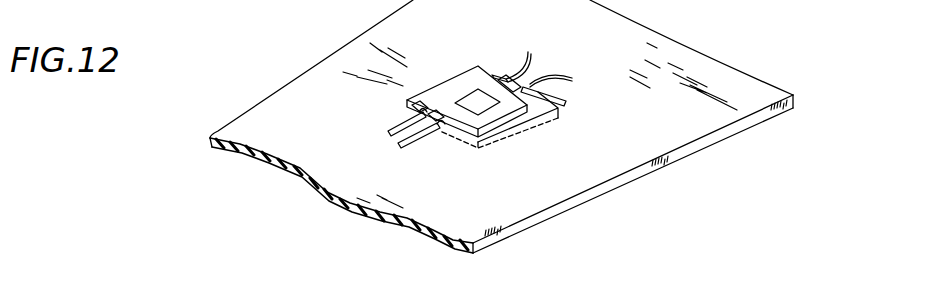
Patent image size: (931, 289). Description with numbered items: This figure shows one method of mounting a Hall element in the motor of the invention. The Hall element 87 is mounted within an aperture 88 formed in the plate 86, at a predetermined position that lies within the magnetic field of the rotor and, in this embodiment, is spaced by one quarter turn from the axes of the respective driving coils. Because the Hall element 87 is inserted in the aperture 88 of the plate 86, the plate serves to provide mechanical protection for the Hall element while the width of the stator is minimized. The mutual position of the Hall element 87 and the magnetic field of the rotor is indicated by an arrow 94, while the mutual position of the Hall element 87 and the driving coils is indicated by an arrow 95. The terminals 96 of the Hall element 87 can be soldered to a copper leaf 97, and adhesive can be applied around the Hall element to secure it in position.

The plate 86 is at (590, 175).
The Hall element 87 is at (477, 92).
The aperture 88 is at (426, 97).
The arrow 94 is at (532, 72).
The arrow 95 is at (520, 134).
The terminals 96 is at (512, 76).
The copper leaf 97 is at (572, 79).